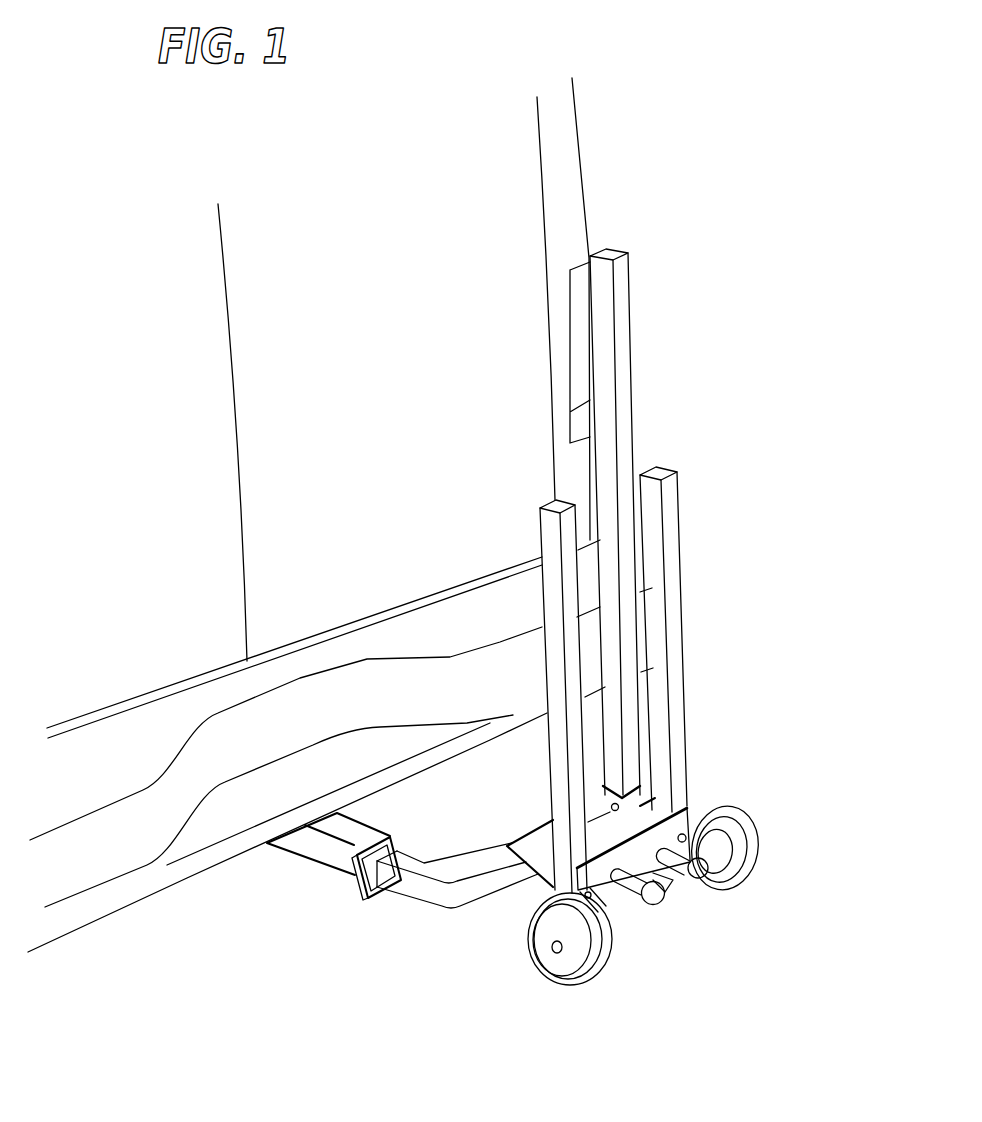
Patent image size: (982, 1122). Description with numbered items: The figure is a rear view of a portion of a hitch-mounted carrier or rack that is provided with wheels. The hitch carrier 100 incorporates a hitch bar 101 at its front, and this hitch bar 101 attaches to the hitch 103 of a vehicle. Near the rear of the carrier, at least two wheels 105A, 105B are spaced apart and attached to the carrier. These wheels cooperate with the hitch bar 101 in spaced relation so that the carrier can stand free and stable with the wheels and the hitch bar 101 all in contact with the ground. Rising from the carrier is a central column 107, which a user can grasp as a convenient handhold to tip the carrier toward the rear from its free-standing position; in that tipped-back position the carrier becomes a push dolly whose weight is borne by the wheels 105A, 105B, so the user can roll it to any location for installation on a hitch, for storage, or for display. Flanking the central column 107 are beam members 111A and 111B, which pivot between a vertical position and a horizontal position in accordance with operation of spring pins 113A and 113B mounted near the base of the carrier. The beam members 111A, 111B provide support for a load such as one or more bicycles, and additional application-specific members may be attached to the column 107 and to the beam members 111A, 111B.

The hitch carrier 100 is at (749, 453).
The hitch bar 101 is at (437, 895).
The hitch 103 is at (330, 871).
The wheel 105A is at (557, 983).
The wheel 105B is at (731, 891).
The central column 107 is at (628, 290).
The beam member 111A is at (552, 791).
The beam member 111B is at (683, 637).
The spring pin 113A is at (653, 897).
The spring pin 113B is at (698, 879).